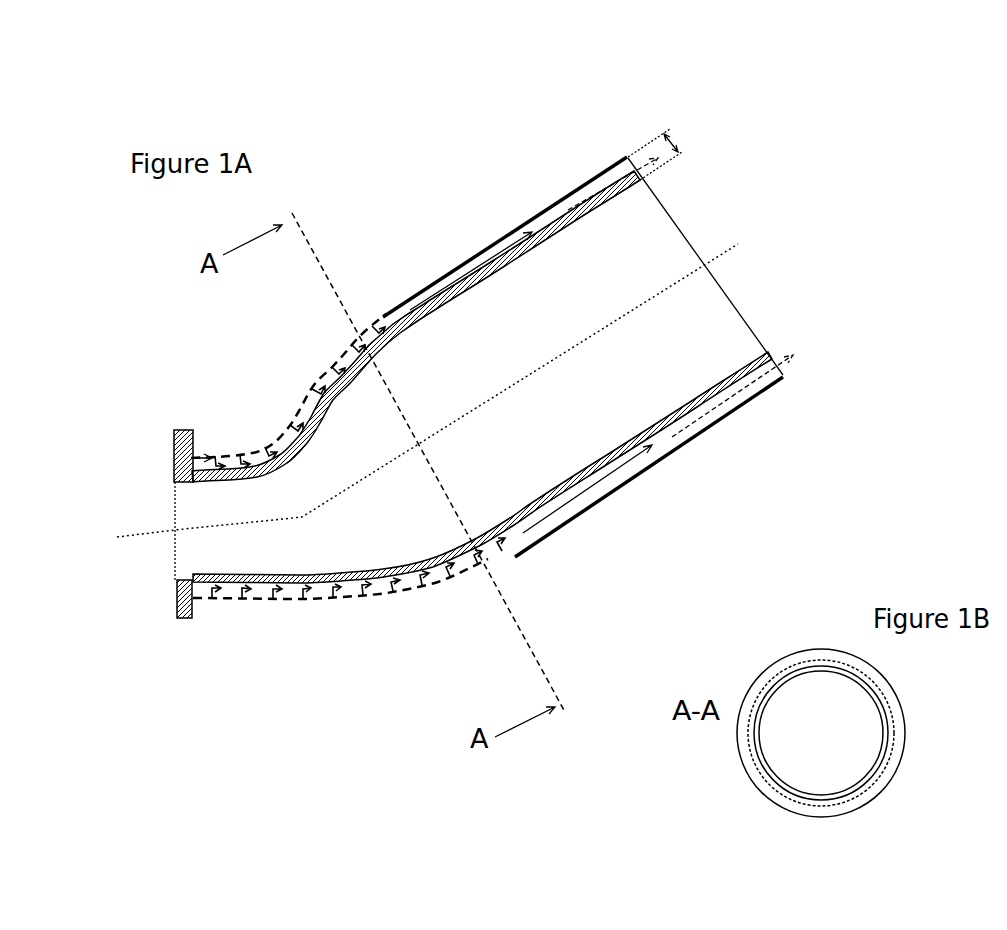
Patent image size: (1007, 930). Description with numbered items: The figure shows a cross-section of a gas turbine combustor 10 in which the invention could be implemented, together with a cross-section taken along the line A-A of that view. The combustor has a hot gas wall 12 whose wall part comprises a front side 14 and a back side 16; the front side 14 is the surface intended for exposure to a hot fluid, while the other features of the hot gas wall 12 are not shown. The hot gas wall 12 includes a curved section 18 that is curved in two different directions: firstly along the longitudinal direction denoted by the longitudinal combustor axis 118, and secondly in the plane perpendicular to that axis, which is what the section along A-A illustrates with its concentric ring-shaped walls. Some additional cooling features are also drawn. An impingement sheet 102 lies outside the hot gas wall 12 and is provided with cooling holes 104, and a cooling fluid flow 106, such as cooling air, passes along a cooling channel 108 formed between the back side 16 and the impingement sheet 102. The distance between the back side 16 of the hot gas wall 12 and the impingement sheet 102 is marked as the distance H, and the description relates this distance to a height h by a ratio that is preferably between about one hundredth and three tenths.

In FIG. 1A, the gas turbine combustor 10 is at (786, 182).
In FIG. 1A, the hot gas wall 12 is at (786, 324).
In FIG. 1A, the front side 14 is at (654, 420).
In FIG. 1B, the front side 14 is at (762, 702).
In FIG. 1A, the back side 16 is at (660, 432).
In FIG. 1B, the back side 16 is at (785, 672).
In FIG. 1A, the curved section 18 is at (448, 614).
In FIG. 1A, the impingement sheet 102 is at (318, 600).
In FIG. 1B, the impingement sheet 102 is at (833, 648).
In FIG. 1A, the cooling holes 104 is at (273, 602).
In FIG. 1A, the cooling fluid flow 106 is at (553, 513).
In FIG. 1A, the cooling channel 108 is at (692, 434).
In FIG. 1A, the longitudinal combustor axis 118 is at (162, 528).